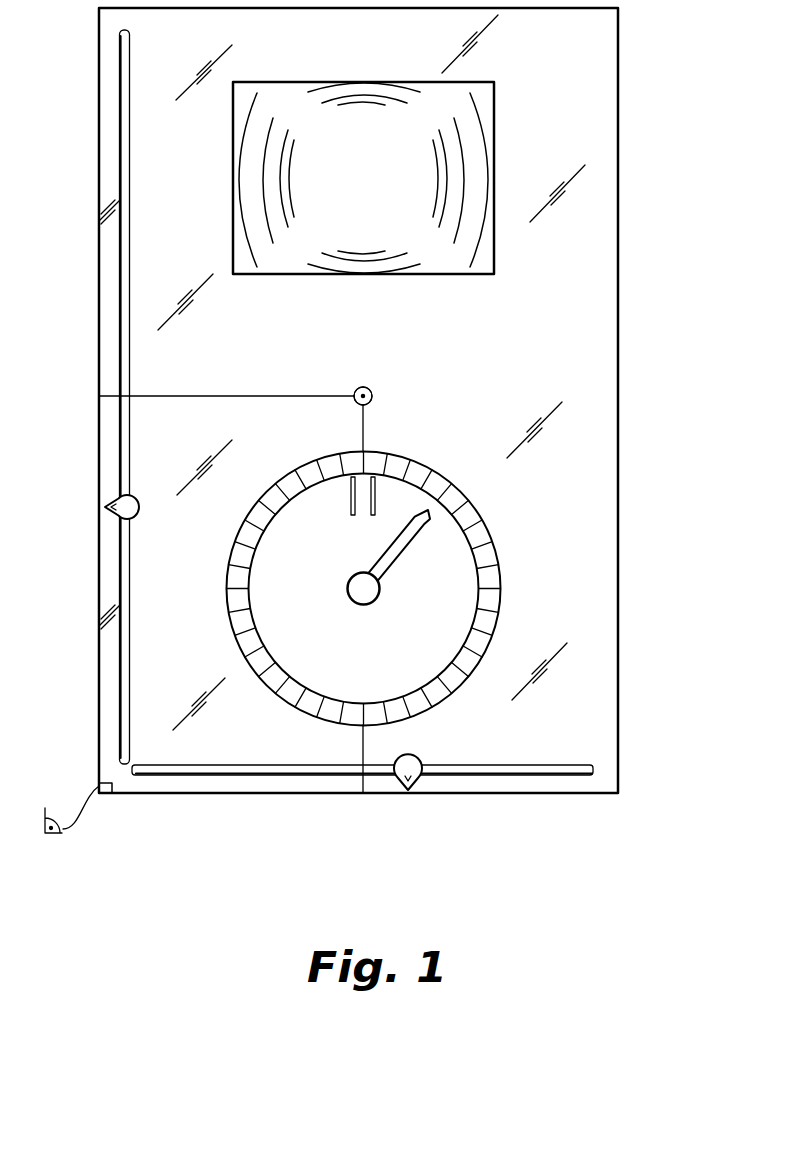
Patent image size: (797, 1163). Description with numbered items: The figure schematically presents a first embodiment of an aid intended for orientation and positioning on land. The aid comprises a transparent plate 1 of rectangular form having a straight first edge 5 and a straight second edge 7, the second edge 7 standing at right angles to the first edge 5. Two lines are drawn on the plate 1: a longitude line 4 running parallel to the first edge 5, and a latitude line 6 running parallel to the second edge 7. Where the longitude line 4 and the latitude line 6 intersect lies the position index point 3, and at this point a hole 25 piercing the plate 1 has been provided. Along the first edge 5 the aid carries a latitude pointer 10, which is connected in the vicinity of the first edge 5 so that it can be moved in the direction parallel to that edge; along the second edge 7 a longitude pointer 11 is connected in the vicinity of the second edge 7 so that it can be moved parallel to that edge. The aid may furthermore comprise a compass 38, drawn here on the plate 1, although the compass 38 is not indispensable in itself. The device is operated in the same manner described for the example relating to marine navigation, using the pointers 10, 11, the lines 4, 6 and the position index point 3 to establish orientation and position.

The transparent plate 1 is at (608, 296).
The position index point 3 is at (363, 387).
The longitude line 4 is at (365, 434).
The first edge 5 is at (99, 352).
The latitude line 6 is at (253, 396).
The second edge 7 is at (288, 794).
The latitude pointer 10 is at (117, 500).
The longitude pointer 11 is at (402, 785).
The hole 25 is at (372, 394).
The compass 38 is at (455, 568).